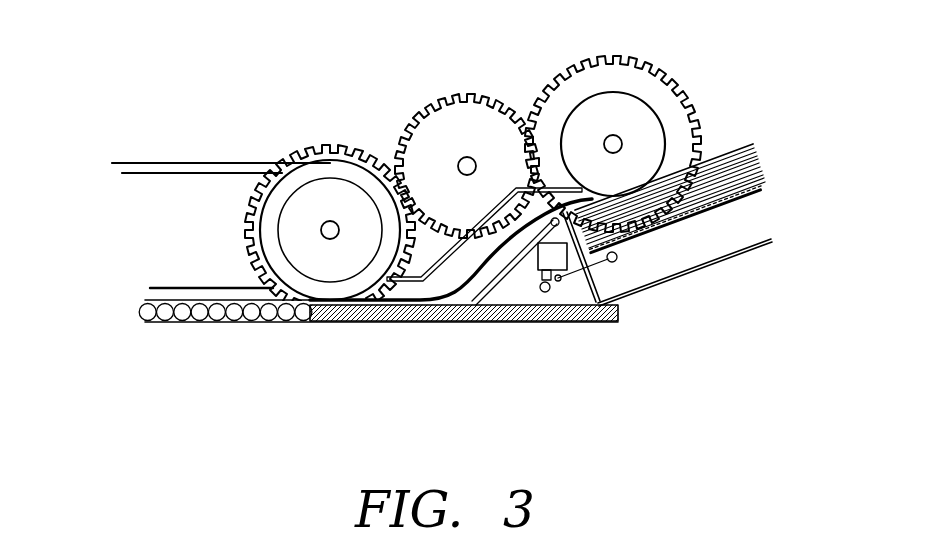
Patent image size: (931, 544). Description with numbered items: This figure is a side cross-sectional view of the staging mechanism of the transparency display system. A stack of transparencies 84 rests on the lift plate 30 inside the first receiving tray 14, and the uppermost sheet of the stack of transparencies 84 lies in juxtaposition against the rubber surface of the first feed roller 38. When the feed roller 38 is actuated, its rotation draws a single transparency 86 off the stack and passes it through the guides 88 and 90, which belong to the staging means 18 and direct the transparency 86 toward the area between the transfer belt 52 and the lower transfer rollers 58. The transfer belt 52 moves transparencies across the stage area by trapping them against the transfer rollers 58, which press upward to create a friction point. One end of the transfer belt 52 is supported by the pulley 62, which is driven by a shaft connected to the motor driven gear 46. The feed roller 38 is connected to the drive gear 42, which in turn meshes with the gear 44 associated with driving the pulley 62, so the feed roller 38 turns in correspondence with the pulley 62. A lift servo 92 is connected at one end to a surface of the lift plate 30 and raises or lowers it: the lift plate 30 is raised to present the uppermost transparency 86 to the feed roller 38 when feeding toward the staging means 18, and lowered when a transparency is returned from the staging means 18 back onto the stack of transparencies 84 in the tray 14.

The first receiving tray 14 is at (708, 263).
The staging means 18 is at (198, 95).
The lift plate 30 is at (672, 227).
The first feed roller 38 is at (602, 107).
The drive gear 42 is at (578, 72).
The gear 44 is at (457, 112).
The motor driven gear 46 is at (326, 148).
The transfer belt 52 is at (200, 292).
The lower transfer rollers 58 is at (216, 312).
The pulley 62 is at (285, 190).
The stack of transparencies 84 is at (735, 153).
The transparency 86 is at (437, 305).
The guide 88 is at (488, 210).
The guide 90 is at (498, 323).
The lift servo 92 is at (548, 260).